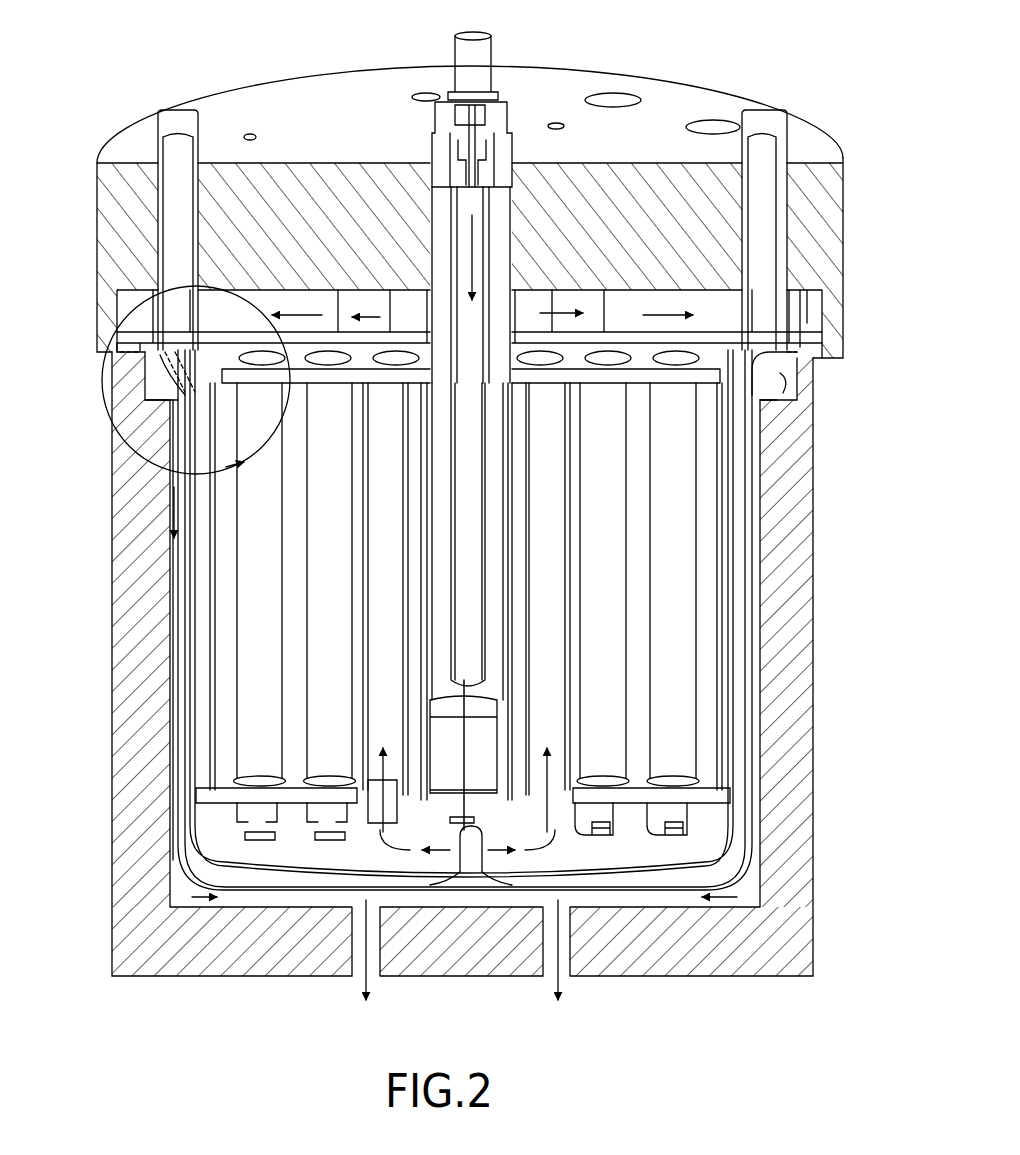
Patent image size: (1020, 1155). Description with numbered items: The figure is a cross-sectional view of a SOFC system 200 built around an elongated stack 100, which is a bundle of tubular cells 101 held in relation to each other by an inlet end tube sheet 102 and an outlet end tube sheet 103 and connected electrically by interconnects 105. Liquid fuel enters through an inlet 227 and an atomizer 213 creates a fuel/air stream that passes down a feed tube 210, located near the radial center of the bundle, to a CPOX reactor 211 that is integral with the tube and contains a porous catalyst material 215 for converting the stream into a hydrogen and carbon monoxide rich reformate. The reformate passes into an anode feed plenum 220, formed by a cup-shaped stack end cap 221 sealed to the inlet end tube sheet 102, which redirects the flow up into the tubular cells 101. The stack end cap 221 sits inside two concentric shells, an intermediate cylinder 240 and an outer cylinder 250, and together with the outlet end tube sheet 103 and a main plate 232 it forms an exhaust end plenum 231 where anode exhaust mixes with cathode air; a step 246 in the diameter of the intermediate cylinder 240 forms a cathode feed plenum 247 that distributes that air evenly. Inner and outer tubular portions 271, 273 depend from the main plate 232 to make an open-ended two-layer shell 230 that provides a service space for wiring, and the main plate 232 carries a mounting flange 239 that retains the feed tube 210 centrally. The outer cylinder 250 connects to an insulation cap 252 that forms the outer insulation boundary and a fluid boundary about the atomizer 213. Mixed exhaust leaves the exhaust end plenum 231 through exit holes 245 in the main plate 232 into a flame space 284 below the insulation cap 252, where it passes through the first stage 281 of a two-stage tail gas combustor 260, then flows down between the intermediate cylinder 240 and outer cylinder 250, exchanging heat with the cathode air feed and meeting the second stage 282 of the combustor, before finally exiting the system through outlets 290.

The SOFC system 200 is at (106, 82).
The feed tube 210 is at (400, 170).
The inlet 227 is at (477, 108).
The atomizer 213 is at (495, 155).
The insulation cap 252 is at (800, 145).
The mounting flange 239 is at (408, 345).
The flame space 284 is at (246, 310).
The first stage 281 is at (330, 300).
The exit holes 245 is at (408, 335).
The tail gas combustor 260 is at (558, 302).
The outlet end tube sheet 103 is at (633, 337).
The main plate 232 is at (700, 334).
The exhaust end plenum 231 is at (700, 350).
The step 246 is at (770, 398).
The cathode feed plenum 247 is at (153, 393).
The intermediate cylinder 240 is at (752, 511).
The tubular cells 101 is at (685, 545).
The elongated stack 100 is at (702, 590).
The porous catalyst material 215 is at (480, 735).
The second stage 282 is at (167, 760).
The inlet end tube sheet 102 is at (702, 795).
The inner tubular portion 271 is at (220, 566).
The outer tubular portion 273 is at (185, 600).
The outer cylinder 250 is at (112, 638).
The CPOX reactor 211 is at (435, 697).
The two-layer shell 230 is at (183, 720).
The anode feed plenum 220 is at (300, 845).
The interconnects 105 is at (373, 825).
The stack end cap 221 is at (528, 872).
The outlets 290 is at (353, 957).